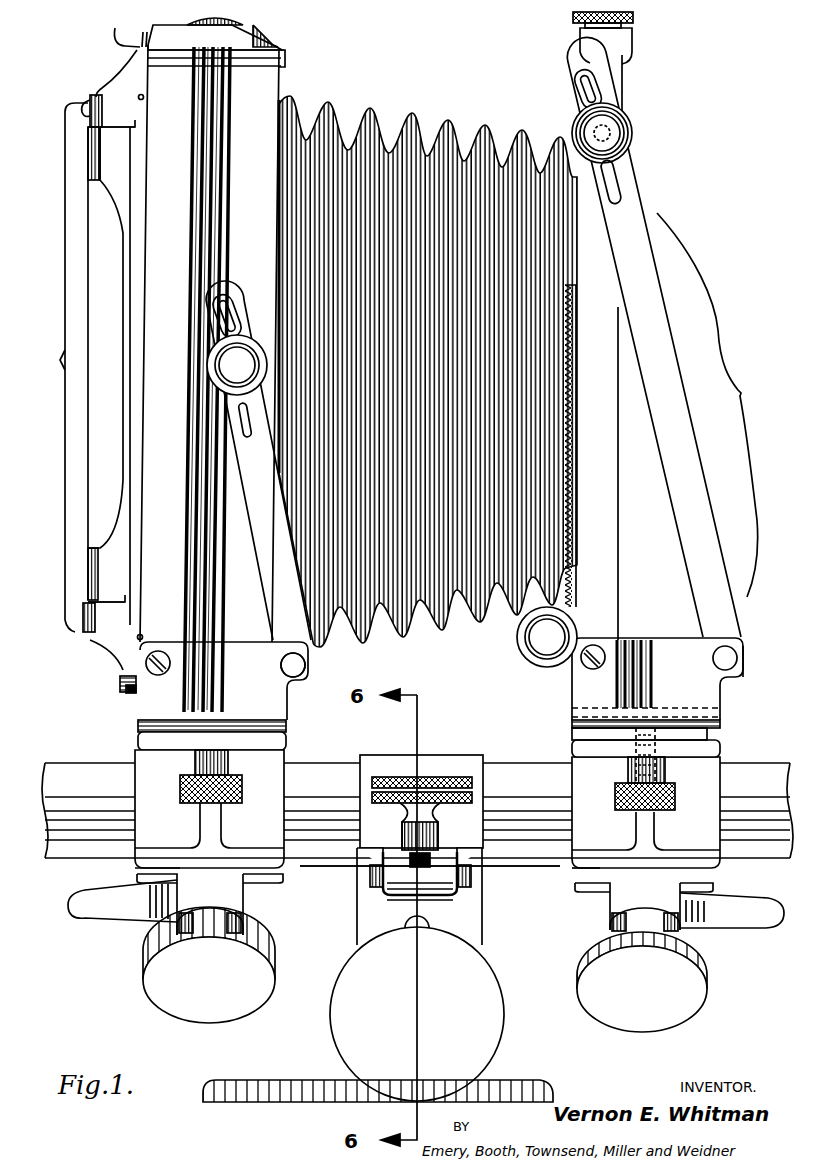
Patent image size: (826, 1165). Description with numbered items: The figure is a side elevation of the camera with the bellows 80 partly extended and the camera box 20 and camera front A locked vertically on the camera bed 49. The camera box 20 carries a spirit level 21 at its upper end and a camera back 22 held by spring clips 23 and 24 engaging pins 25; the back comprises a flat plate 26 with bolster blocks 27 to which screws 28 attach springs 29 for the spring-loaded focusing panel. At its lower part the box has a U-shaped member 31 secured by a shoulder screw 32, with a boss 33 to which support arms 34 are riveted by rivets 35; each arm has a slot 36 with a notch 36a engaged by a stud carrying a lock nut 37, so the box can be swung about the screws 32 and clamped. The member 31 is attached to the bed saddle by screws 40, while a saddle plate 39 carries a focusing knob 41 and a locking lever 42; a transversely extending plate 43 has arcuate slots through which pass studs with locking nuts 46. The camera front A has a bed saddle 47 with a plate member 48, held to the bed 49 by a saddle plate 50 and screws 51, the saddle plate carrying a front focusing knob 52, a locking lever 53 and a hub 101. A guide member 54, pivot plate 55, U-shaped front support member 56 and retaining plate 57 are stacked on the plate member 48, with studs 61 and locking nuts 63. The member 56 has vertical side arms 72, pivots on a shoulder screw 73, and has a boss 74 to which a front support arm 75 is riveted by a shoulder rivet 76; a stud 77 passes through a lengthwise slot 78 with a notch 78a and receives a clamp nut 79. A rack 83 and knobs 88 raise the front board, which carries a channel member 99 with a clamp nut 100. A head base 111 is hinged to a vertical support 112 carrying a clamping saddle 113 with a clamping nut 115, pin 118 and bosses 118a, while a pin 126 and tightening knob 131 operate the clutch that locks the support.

The camera box 20 is at (275, 76).
The spirit level 21 is at (240, 25).
The camera back 22 is at (82, 367).
The spring clips 23 is at (116, 29).
The spring clips 24 is at (119, 684).
The pins 25 is at (148, 44).
The flat plate 26 is at (141, 318).
The bolster blocks 27 is at (112, 130).
The screws 28 is at (88, 110).
The springs 29 is at (113, 127).
The U-shaped member 31 is at (285, 710).
The shoulder screw 32 is at (156, 676).
The boss 33 is at (306, 665).
The support arms 34 is at (272, 626).
The rivets 35 is at (281, 665).
The slot 36 is at (240, 430).
The offset or notch 36a is at (238, 320).
The lock nut 37 is at (245, 355).
The saddle plate 39 is at (140, 869).
The screws 40 is at (152, 878).
The focusing knob 41 is at (148, 988).
The locking lever 42 is at (110, 914).
The transversely extending plate 43 is at (170, 737).
The locking nuts 46 is at (230, 802).
The camera front bed saddle 47 is at (720, 793).
The transversely extended plate member 48 is at (722, 762).
The camera bed 49 is at (324, 777).
The saddle plate 50 is at (577, 882).
The screws 51 is at (586, 886).
The front focusing knob 52 is at (702, 986).
The front focusing locking lever 53 is at (757, 921).
The guide member 54 is at (720, 738).
The pivot plate 55 is at (572, 727).
The U-shaped front support member 56 is at (673, 645).
The retaining plate 57 is at (598, 712).
The studs 61 is at (637, 742).
The locking nuts 63 is at (658, 810).
The vertical side arms 72 is at (614, 514).
The shoulder screw 73 is at (593, 645).
The protruding boss 74 is at (740, 672).
The front support arm 75 is at (706, 514).
The shoulder rivet 76 is at (738, 658).
The stud 77 is at (610, 133).
The lengthwise slot 78 is at (617, 193).
The offset or notch 78a is at (598, 92).
The clamp nuts 79 is at (630, 150).
The bellows 80 is at (415, 120).
The gear rack 83 is at (577, 358).
The knobs 88 is at (518, 637).
The channel member 99 is at (634, 48).
The clamp nut 100 is at (636, 16).
The hub or boss 101 is at (240, 899).
The head base 111 is at (520, 1090).
The vertical support 112 is at (478, 882).
The clamping saddle 113 is at (388, 762).
The clamping nut 115 is at (458, 777).
The pin 118 is at (405, 896).
The bosses 118a is at (386, 877).
The unthreaded pin 126 is at (424, 918).
The tightening knob 131 is at (505, 1005).
The camera front A is at (712, 405).